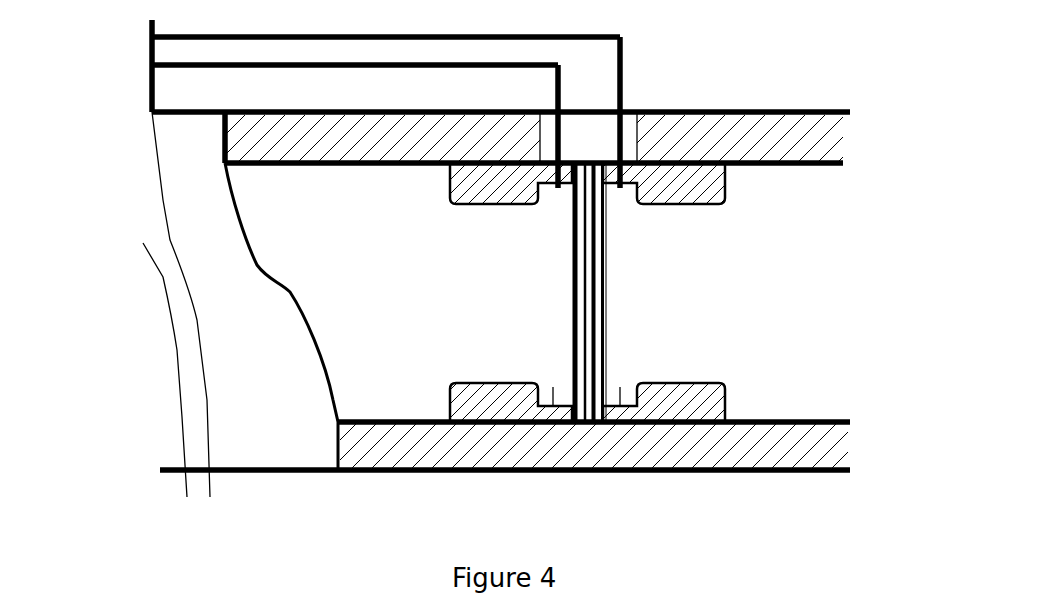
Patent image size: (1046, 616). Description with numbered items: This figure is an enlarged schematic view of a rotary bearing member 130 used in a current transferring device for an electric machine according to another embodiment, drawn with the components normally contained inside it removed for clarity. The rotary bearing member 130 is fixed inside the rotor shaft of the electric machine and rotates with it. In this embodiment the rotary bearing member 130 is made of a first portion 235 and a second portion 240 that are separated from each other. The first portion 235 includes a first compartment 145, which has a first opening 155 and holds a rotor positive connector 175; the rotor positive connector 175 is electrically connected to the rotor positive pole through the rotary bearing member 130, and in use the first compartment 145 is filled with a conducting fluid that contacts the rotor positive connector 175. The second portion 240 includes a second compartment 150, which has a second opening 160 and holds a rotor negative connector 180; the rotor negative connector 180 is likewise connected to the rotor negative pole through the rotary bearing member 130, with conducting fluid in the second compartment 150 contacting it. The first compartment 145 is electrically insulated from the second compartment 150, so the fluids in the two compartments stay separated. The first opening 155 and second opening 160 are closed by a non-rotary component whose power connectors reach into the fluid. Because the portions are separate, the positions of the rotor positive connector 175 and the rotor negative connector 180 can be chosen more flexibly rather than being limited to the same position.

The rotary bearing member 130 is at (499, 110).
The second portion 240 is at (350, 104).
The first portion 235 is at (749, 110).
The rotor negative connector 180 is at (538, 188).
The second opening 160 is at (533, 352).
The first opening 155 is at (634, 352).
The rotor positive connector 175 is at (728, 198).
The second compartment 150 is at (552, 423).
The first compartment 145 is at (620, 423).